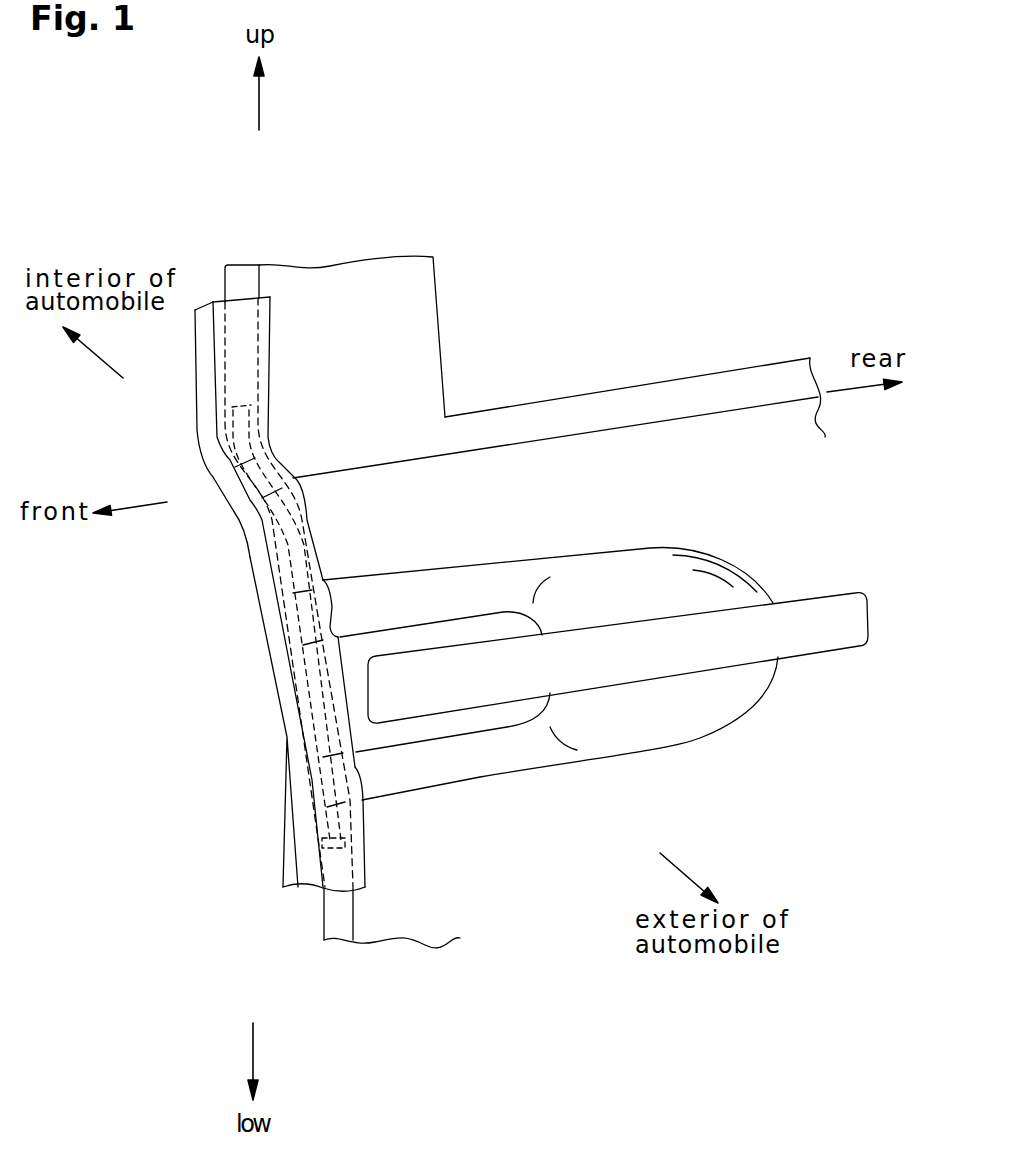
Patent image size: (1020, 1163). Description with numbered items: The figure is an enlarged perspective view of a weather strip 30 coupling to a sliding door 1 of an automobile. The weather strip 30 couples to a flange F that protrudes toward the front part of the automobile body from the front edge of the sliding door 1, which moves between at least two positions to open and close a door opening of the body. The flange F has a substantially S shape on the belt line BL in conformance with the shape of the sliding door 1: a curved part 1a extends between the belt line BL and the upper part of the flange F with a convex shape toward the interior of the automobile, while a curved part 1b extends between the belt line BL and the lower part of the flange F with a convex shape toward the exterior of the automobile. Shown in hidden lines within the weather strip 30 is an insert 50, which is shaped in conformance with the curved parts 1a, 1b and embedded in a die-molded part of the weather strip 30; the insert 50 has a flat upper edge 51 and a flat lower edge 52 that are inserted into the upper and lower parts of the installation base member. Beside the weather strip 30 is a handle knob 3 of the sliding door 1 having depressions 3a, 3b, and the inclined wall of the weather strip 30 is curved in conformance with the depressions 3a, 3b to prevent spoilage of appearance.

The sliding door 1 is at (428, 877).
The curved part 1a is at (197, 503).
The curved part 1b is at (262, 697).
The handle knob 3 is at (833, 635).
The depression 3a is at (328, 612).
The depression 3b is at (355, 775).
The weather strip 30 is at (281, 556).
The insert 50 is at (307, 617).
The upper edge 51 is at (223, 413).
The lower edge 52 is at (322, 841).
The flange F is at (242, 278).
The belt line BL is at (565, 395).